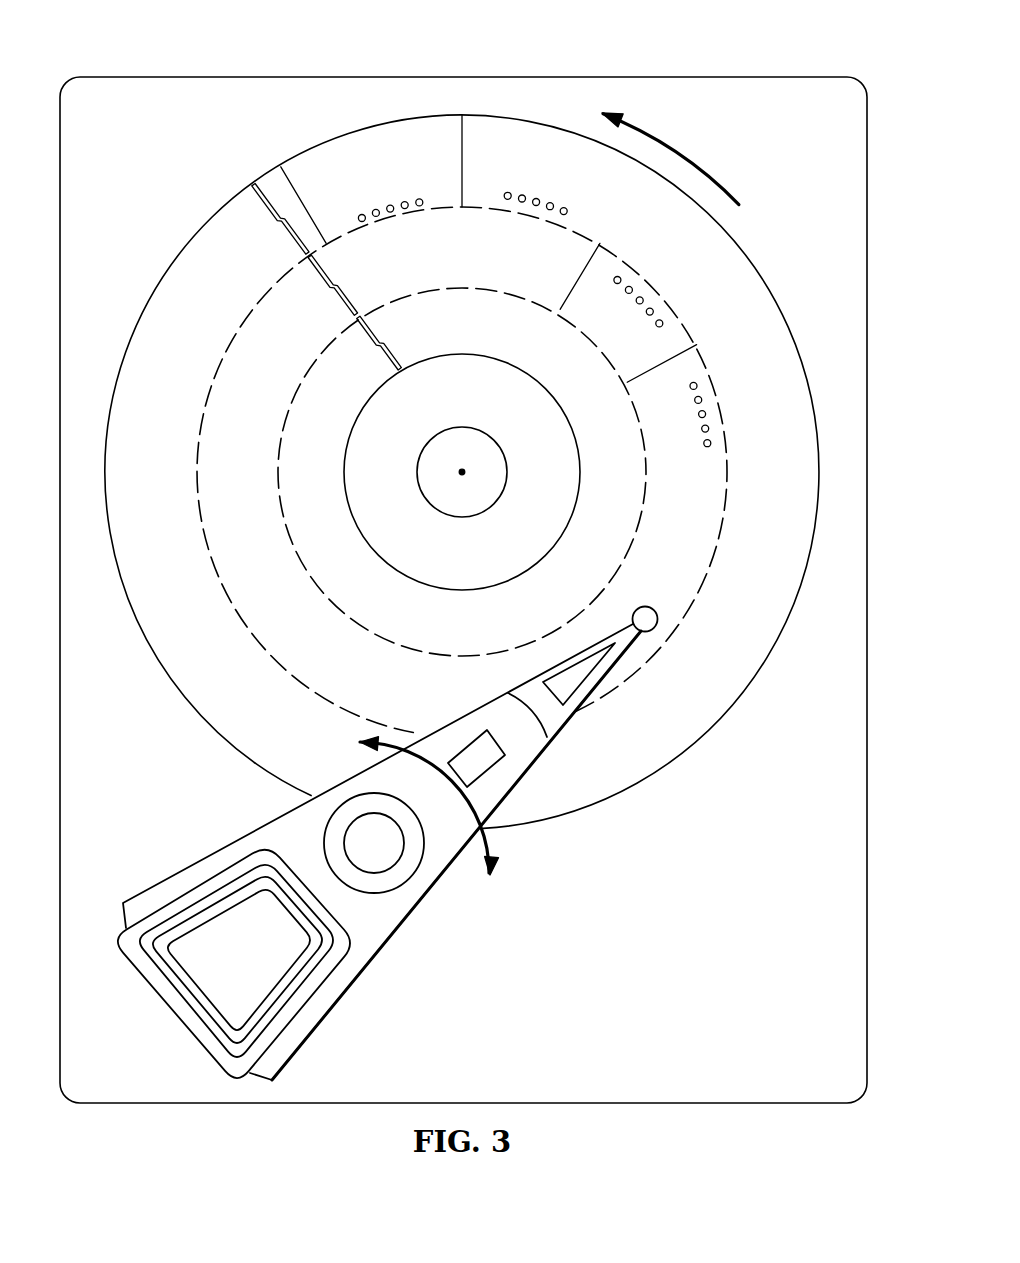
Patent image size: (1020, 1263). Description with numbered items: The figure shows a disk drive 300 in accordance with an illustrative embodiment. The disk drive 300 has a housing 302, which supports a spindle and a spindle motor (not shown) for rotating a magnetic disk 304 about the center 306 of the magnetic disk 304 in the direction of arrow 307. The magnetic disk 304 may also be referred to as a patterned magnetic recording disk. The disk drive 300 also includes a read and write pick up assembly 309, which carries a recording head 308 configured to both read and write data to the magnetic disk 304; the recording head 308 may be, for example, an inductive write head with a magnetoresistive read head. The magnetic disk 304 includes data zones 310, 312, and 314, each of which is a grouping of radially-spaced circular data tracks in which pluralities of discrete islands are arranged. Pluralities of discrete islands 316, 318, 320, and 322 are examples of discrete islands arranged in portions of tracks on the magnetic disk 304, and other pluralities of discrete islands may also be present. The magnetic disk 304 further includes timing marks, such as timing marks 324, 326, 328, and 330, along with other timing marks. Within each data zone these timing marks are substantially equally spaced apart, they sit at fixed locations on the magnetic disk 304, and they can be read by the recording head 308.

The disk drive 300 is at (186, 58).
The housing 302 is at (670, 77).
The magnetic disk 304 is at (194, 186).
The center 306 is at (461, 463).
The arrow 307 is at (683, 155).
The recording head 308 is at (647, 606).
The read and write pick up assembly 309 is at (399, 929).
The data zone 310 is at (272, 219).
The data zone 312 is at (320, 286).
The data zone 314 is at (366, 346).
The plurality of discrete islands 316 is at (393, 198).
The plurality of discrete islands 318 is at (543, 191).
The plurality of discrete islands 320 is at (650, 294).
The plurality of discrete islands 322 is at (714, 416).
The timing mark 324 is at (303, 203).
The timing mark 326 is at (464, 160).
The timing mark 328 is at (582, 273).
The timing mark 330 is at (681, 350).